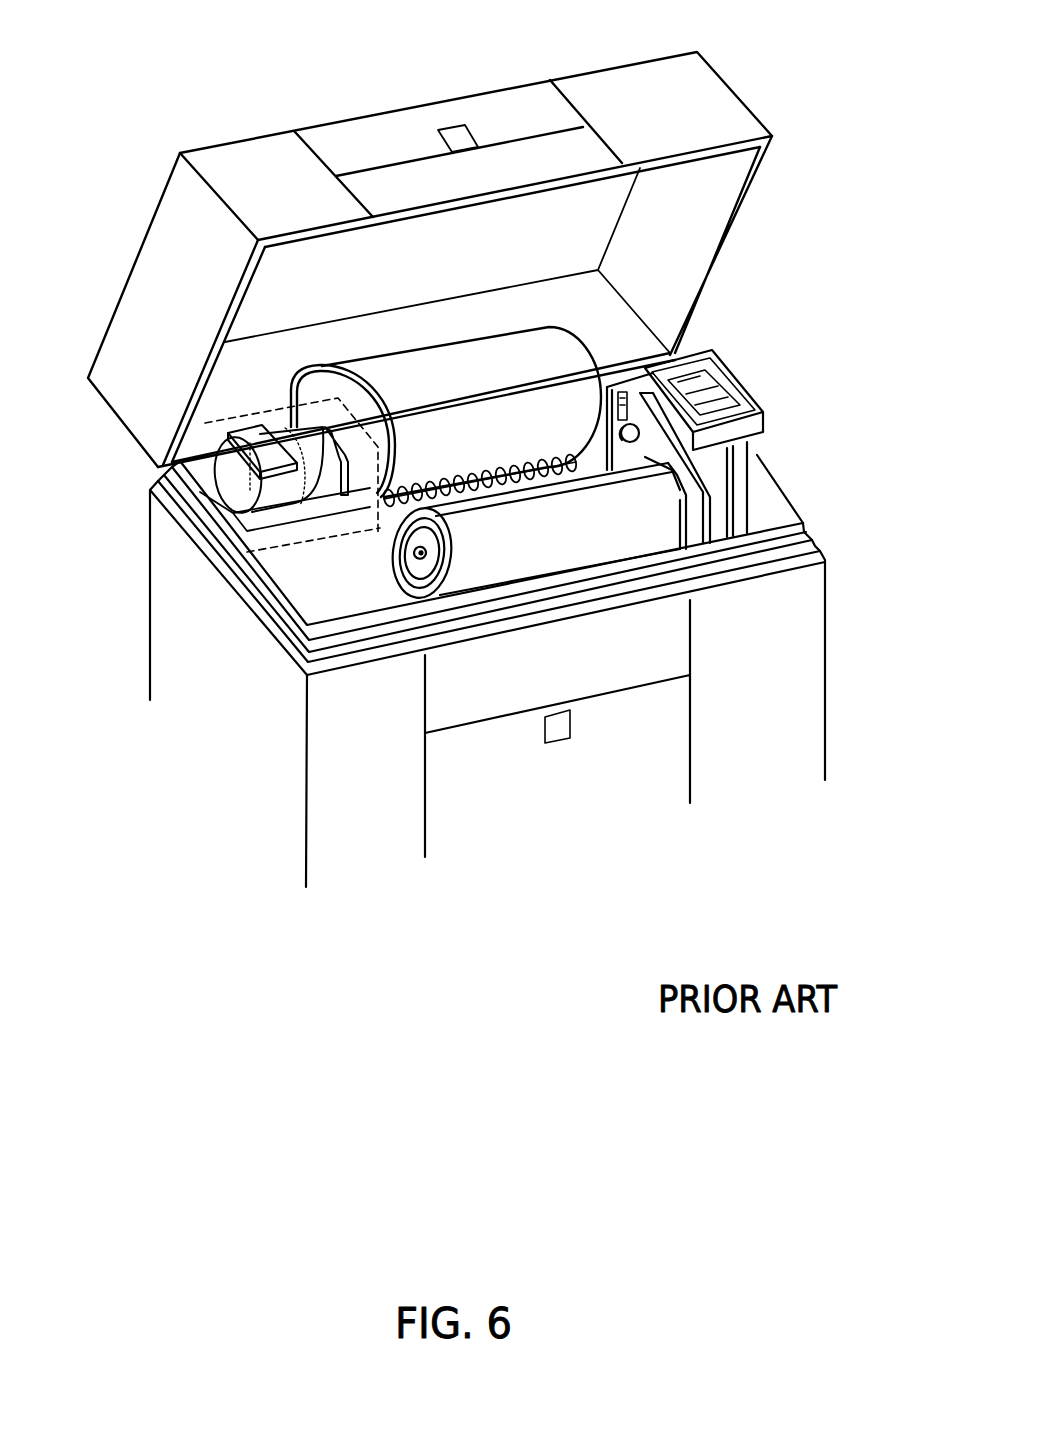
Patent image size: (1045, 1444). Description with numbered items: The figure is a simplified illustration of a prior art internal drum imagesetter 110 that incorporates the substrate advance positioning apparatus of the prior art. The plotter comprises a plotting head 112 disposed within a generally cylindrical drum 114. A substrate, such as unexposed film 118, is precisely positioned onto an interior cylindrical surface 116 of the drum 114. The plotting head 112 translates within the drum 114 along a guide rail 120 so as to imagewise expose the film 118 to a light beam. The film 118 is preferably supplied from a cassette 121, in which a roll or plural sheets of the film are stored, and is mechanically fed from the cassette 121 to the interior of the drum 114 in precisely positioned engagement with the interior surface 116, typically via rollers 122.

The internal drum imagesetter 110 is at (738, 88).
The plotting head 112 is at (325, 455).
The drum 114 is at (303, 372).
The interior cylindrical surface 116 is at (328, 383).
The film 118 is at (392, 517).
The guide rail 120 is at (232, 520).
The cassette 121 is at (557, 533).
The rollers 122 is at (572, 460).